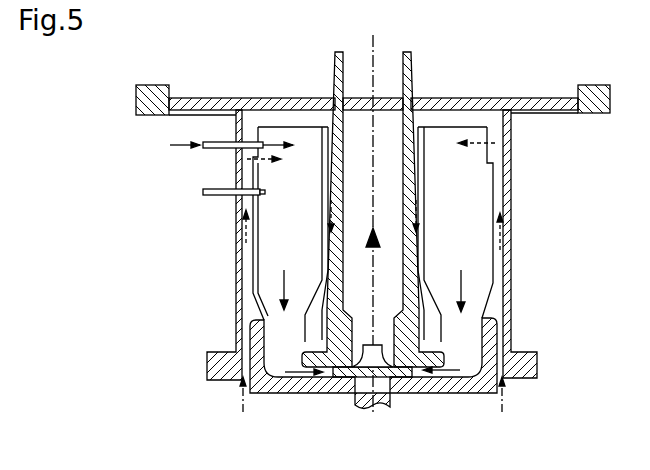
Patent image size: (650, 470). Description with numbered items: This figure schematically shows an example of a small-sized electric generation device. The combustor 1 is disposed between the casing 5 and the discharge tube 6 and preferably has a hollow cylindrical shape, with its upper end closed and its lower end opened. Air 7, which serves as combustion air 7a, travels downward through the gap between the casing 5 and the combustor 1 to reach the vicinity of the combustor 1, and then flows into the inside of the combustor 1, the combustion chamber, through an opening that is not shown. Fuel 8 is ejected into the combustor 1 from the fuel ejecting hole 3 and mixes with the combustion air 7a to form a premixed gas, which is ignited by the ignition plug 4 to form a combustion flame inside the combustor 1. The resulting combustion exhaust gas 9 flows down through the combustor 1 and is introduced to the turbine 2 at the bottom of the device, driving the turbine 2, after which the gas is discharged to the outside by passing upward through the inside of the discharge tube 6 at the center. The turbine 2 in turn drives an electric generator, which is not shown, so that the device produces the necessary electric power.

The combustor 1 is at (270, 257).
The turbine 2 is at (383, 370).
The fuel ejecting hole 3 is at (203, 148).
The ignition plug 4 is at (215, 193).
The casing 5 is at (508, 227).
The discharge tube 6 is at (409, 80).
The air 7 is at (241, 410).
The combustion air 7a is at (280, 163).
The fuel 8 is at (283, 143).
The combustion exhaust gas 9 is at (287, 290).